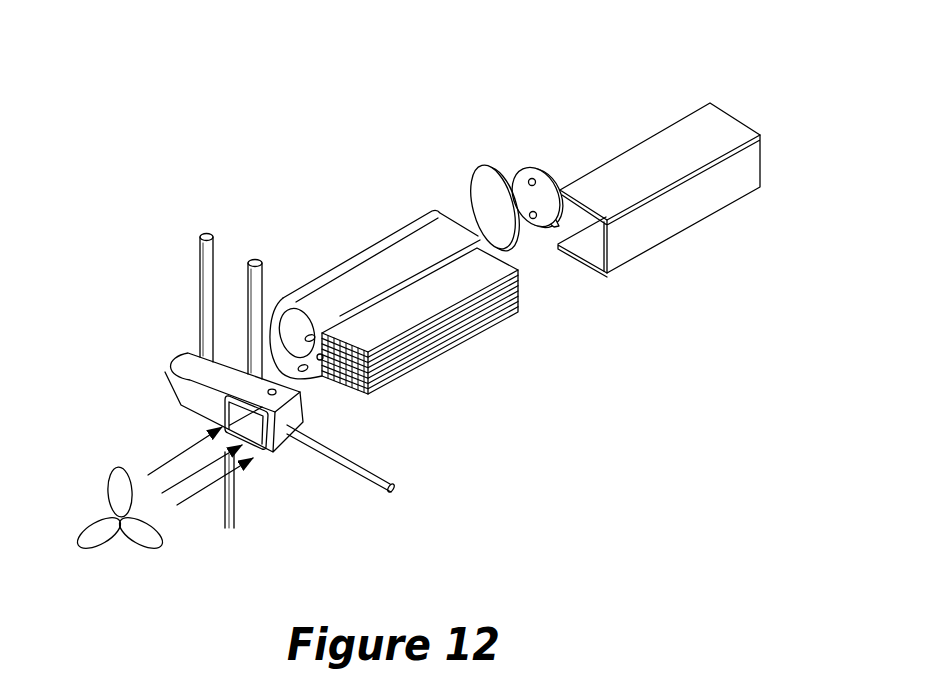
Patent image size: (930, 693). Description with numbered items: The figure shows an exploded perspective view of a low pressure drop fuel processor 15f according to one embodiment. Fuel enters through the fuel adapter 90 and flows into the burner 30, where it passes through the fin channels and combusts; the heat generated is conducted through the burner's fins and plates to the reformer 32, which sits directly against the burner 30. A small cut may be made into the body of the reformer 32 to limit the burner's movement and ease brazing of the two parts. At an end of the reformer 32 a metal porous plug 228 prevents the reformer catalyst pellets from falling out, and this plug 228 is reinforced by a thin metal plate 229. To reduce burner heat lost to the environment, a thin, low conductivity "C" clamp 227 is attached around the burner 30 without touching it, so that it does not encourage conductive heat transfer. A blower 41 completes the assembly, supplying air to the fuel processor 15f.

The low pressure drop fuel processor 15f is at (205, 47).
The "C" clamp 227 is at (698, 175).
The metal porous plug 228 is at (348, 234).
The thin metal plate 229 is at (524, 144).
The burner 30 is at (420, 257).
The reformer 32 is at (366, 266).
The fuel adapter 90 is at (239, 440).
The blower 41 is at (76, 537).